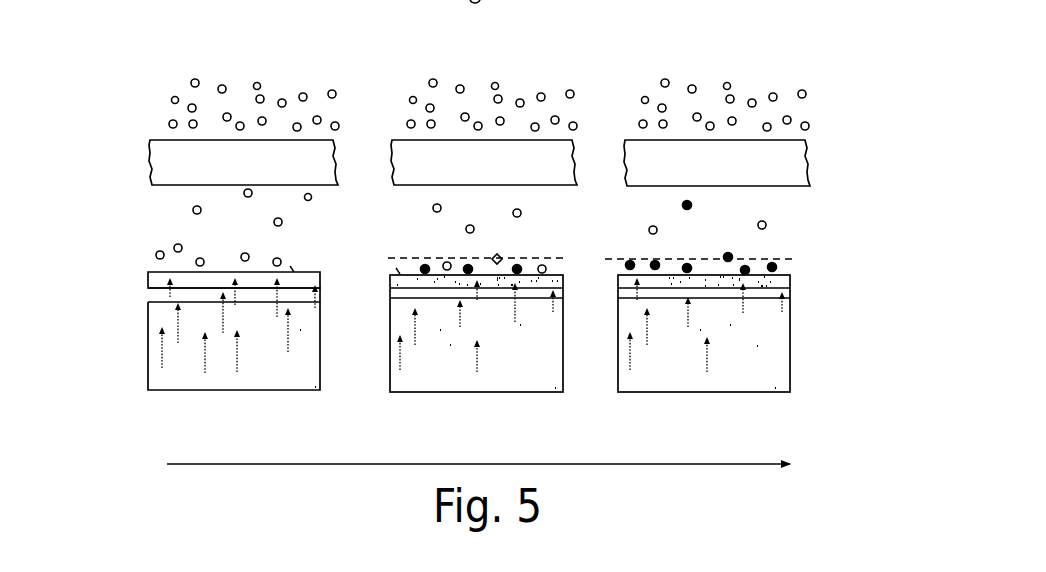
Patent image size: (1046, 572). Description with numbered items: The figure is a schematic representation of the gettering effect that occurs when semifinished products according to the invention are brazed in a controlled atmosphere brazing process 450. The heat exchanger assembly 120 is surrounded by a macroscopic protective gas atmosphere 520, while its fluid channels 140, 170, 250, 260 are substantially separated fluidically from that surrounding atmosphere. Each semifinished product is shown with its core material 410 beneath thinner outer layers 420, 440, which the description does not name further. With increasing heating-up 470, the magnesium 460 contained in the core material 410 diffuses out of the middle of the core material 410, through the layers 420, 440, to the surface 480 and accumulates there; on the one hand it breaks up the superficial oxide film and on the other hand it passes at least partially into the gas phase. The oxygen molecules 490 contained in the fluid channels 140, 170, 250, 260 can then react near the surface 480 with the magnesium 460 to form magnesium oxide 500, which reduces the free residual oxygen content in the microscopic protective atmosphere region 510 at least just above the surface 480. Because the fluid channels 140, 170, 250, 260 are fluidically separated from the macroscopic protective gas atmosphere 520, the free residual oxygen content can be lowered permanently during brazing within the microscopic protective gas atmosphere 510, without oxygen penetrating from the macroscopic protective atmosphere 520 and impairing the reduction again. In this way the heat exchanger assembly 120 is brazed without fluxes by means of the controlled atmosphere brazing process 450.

The heat exchanger assembly 120 is at (500, 153).
The fluid channel 140 is at (789, 170).
The fluid channel 170 is at (717, 163).
The fluid channel 250 is at (717, 163).
The fluid channel 260 is at (803, 197).
The core material 410 is at (147, 358).
The top layer 420 is at (147, 275).
The intermediate layer 440 is at (147, 295).
The controlled atmosphere brazing process 450 is at (233, 53).
The magnesium 460 is at (288, 355).
The heating-up 470 is at (198, 460).
The surface 480 is at (400, 272).
The oxygen molecules 490 is at (650, 228).
The magnesium oxide 500 is at (622, 262).
The microscopic protective atmosphere region 510 is at (795, 256).
The macroscopic protective gas atmosphere 520 is at (819, 108).